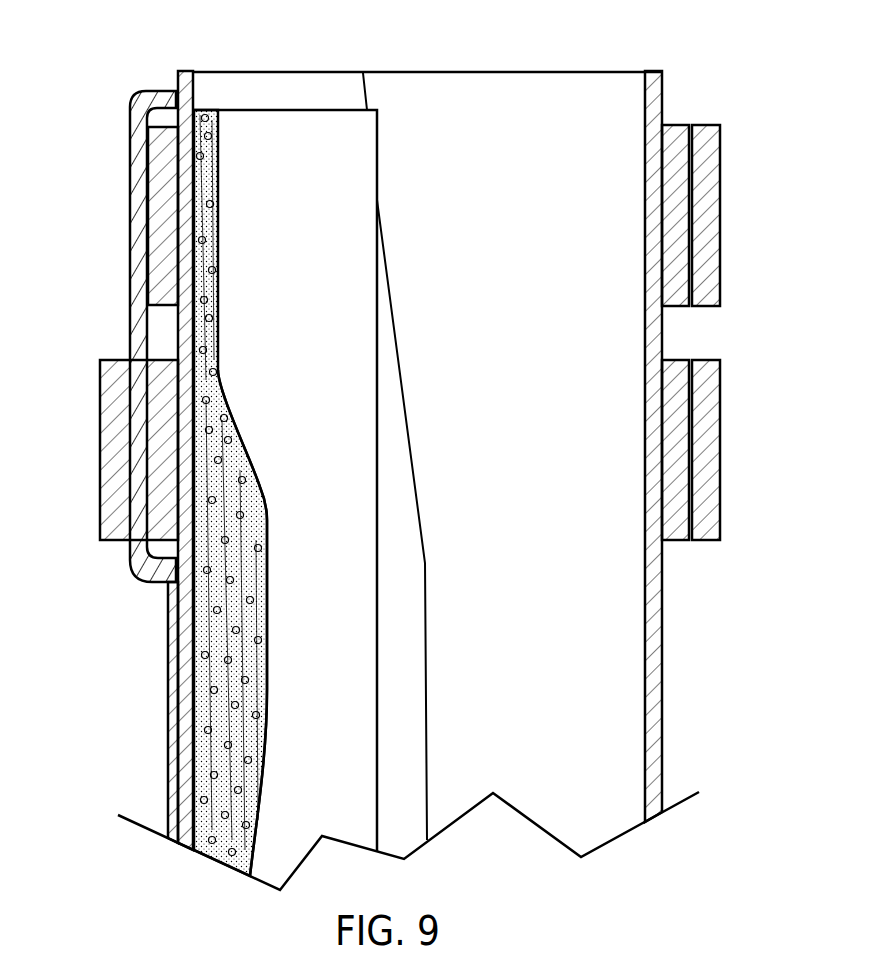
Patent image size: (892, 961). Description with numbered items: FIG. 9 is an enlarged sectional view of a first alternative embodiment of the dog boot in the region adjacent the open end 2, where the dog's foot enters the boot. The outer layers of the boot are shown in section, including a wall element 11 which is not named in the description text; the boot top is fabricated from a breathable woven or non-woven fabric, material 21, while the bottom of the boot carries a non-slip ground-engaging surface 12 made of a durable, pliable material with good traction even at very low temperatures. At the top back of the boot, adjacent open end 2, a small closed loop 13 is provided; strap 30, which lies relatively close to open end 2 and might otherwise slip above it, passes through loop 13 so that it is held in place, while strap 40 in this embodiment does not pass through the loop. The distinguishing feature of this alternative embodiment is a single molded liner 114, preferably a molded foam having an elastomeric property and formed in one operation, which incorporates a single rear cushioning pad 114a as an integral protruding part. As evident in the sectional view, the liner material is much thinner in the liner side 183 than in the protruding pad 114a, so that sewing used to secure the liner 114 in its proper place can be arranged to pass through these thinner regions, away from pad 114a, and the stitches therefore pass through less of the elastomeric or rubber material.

The open end 2 is at (425, 72).
The outer panel 11 is at (178, 80).
The non-slip ground-engaging surface 12 is at (168, 667).
The closed loop 13 is at (138, 158).
The material 21 is at (660, 72).
The strap 30 is at (157, 238).
The strap 40 is at (157, 370).
The molded liner 114 is at (210, 98).
The rear cushioning pad 114a is at (269, 648).
The liner second side 183 is at (280, 138).